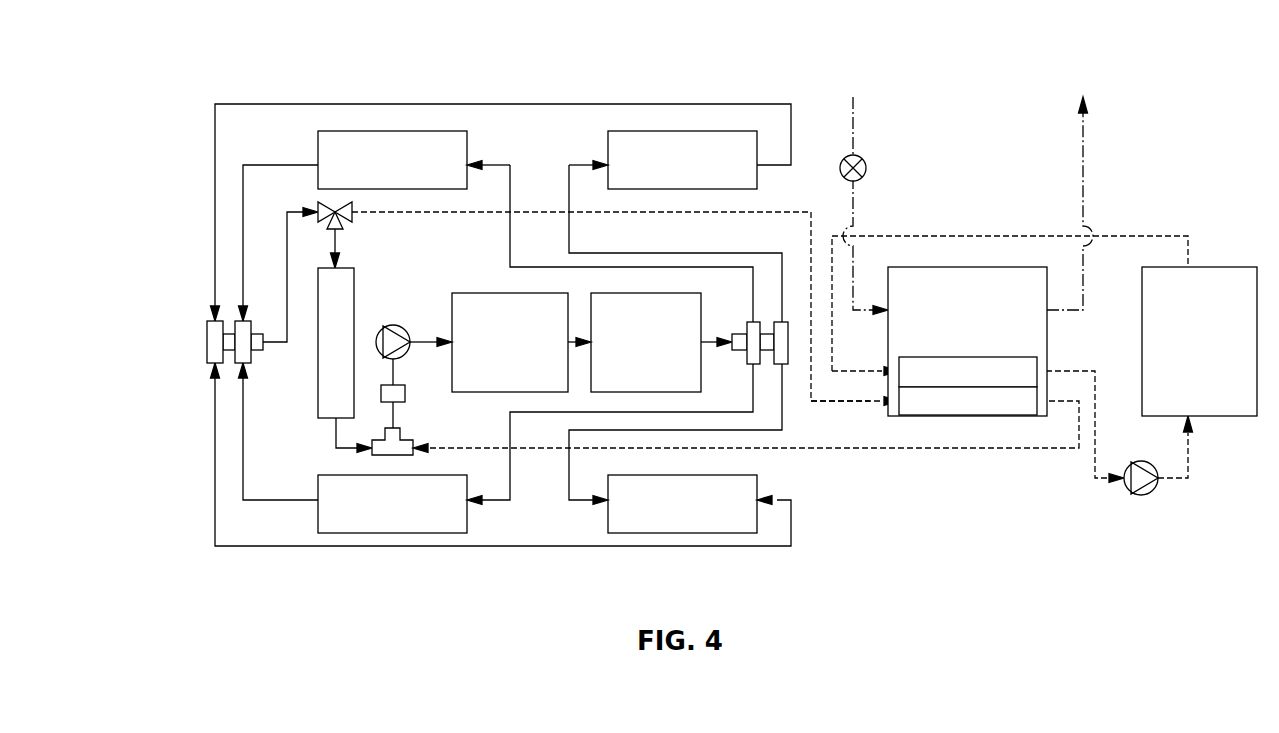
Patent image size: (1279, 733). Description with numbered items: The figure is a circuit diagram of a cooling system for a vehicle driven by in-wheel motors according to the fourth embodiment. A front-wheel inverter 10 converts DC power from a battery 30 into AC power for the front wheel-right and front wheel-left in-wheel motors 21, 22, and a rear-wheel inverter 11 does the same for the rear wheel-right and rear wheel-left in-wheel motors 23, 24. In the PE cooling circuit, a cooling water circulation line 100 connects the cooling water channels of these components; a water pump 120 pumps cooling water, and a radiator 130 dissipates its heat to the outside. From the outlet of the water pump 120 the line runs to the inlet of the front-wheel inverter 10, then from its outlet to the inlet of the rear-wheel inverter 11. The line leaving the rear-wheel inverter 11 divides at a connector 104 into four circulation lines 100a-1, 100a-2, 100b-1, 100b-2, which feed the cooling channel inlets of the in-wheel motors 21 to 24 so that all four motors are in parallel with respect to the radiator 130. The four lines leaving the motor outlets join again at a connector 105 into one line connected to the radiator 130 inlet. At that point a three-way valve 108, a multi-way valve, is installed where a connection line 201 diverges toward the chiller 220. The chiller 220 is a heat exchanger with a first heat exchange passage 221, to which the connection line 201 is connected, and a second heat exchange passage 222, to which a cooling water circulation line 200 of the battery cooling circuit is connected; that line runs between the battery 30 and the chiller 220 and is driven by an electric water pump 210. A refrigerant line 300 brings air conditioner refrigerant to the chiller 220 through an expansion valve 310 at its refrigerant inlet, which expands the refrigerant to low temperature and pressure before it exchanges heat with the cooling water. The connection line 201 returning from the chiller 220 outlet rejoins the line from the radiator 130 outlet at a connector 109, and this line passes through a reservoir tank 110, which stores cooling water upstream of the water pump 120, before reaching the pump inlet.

The front-wheel inverter 10 is at (490, 293).
The rear-wheel inverter 11 is at (633, 293).
The front wheel-right wheel in-wheel motor 21 is at (383, 131).
The front wheel-left wheel in-wheel motor 22 is at (402, 533).
The rear wheel-right wheel in-wheel motor 23 is at (715, 131).
The rear wheel-left wheel in-wheel motor 24 is at (680, 533).
The battery 30 is at (1228, 267).
The cooling water circulation line 100 is at (287, 263).
The circulation line 100a-1 is at (243, 187).
The circulation line 100a-2 is at (277, 500).
The circulation line 100b-1 is at (254, 104).
The circulation line 100b-2 is at (215, 445).
The connector 104 is at (788, 355).
The connector 105 is at (207, 340).
The 3-way valve 108 is at (353, 217).
The connector 109 is at (413, 440).
The reservoir tank 110 is at (405, 393).
The water pump 120 is at (401, 326).
The radiator 130 is at (317, 357).
The cooling water circulation line 200 is at (1140, 235).
The connection line 201 is at (855, 402).
The water pump 210 is at (1142, 495).
The chiller 220 is at (1047, 345).
The first heat exchange passage 221 is at (1027, 405).
The second heat exchange passage 222 is at (915, 373).
The refrigerant line 300 is at (1083, 155).
The expansion valve 310 is at (867, 170).